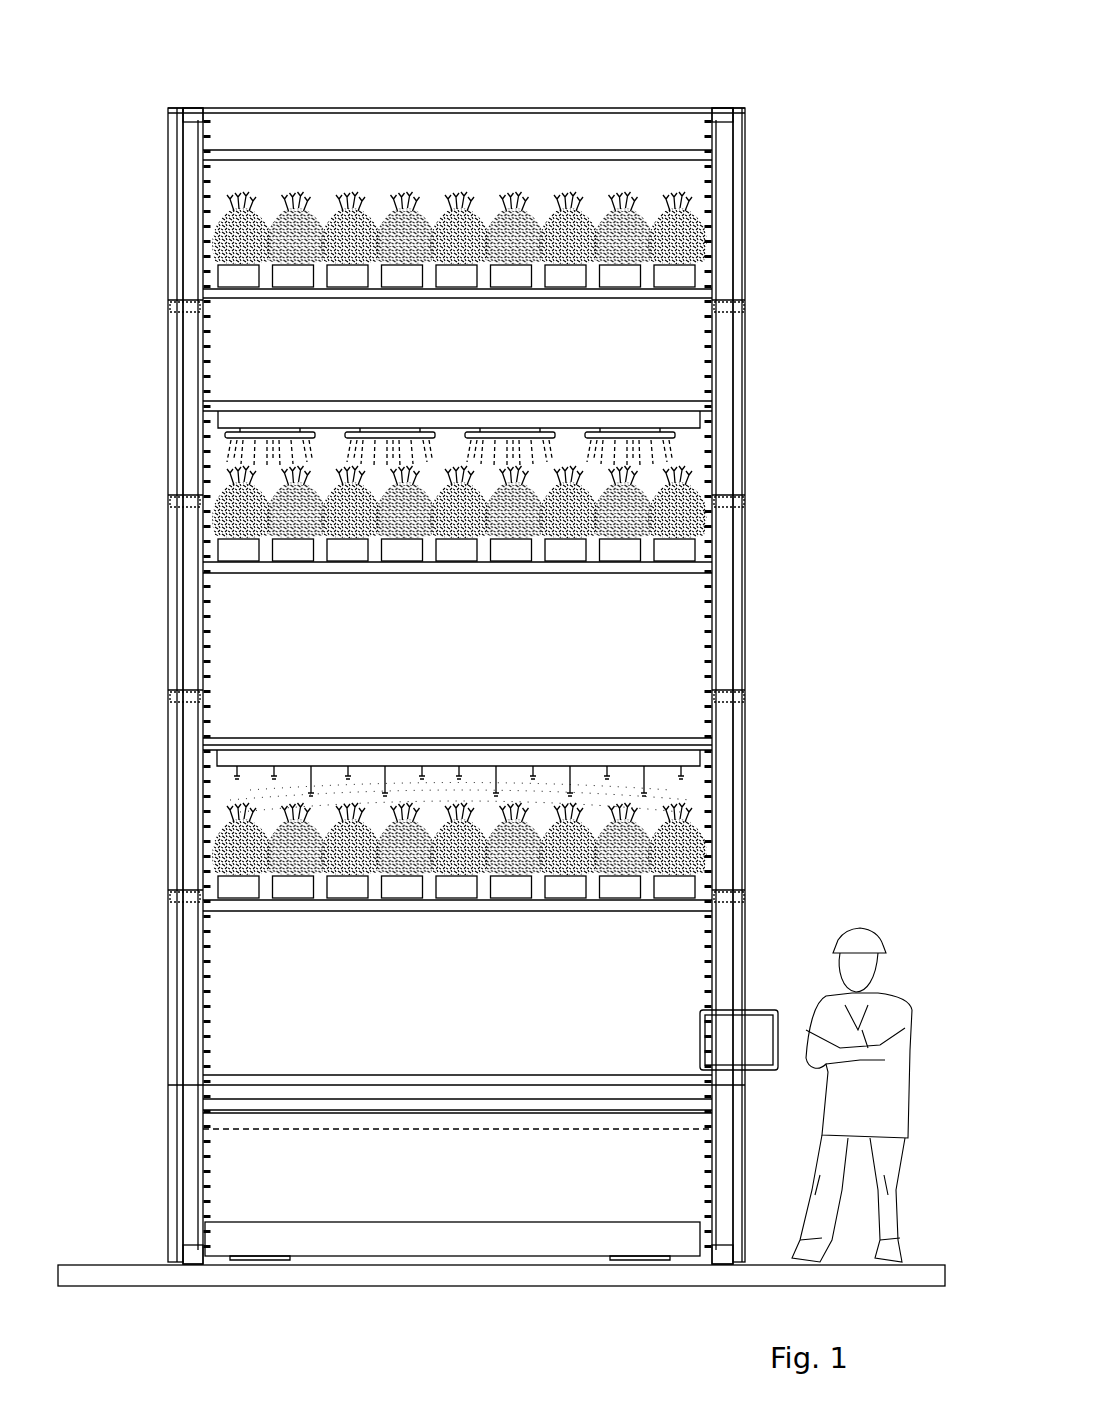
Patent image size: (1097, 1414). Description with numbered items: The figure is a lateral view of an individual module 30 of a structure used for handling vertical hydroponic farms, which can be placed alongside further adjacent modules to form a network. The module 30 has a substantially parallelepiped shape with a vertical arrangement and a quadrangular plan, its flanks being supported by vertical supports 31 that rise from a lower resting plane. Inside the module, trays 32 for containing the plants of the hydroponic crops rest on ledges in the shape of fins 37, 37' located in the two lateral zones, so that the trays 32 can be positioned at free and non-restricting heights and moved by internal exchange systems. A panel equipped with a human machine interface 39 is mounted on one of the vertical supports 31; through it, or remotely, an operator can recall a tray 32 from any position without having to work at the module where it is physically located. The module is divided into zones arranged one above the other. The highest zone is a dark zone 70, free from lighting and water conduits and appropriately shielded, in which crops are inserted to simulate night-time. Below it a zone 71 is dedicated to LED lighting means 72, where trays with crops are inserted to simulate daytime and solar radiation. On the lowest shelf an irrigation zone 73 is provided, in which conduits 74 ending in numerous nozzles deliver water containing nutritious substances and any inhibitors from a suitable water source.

The individual module 30 is at (812, 128).
The vertical support 31 is at (745, 262).
The tray 32 is at (367, 293).
The fin 37 is at (778, 686).
The fin 37' is at (147, 686).
The human machine interface panel 39 is at (750, 1030).
The dark zone 70 is at (297, 170).
The lighting zone 71 is at (705, 456).
The LED lighting means 72 is at (268, 433).
The irrigation zone 73 is at (712, 780).
The conduit 74 is at (275, 778).